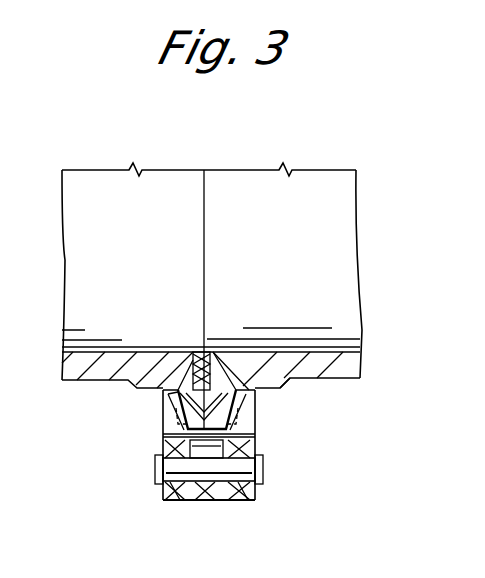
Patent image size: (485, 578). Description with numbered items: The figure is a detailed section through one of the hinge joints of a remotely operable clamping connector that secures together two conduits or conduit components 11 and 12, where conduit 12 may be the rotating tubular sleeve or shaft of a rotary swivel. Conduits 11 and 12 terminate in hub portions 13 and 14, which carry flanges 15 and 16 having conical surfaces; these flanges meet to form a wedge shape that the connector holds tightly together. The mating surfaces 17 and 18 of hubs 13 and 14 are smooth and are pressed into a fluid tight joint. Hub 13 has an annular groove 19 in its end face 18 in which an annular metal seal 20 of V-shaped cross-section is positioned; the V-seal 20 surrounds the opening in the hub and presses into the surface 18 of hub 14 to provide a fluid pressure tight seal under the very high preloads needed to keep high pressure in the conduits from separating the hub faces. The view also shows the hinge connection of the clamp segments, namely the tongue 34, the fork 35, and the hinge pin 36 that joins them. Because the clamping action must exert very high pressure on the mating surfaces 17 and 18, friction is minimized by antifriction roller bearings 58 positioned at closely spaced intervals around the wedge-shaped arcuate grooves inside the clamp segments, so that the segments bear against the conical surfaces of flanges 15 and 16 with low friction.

The conduit 11 is at (66, 384).
The conduit 12 is at (345, 369).
The hub portion 13 is at (126, 400).
The hub portion 14 is at (280, 385).
The flange 15 is at (174, 421).
The flange 16 is at (244, 412).
The mating surface 17 is at (212, 398).
The mating surface 18 is at (197, 357).
The annular groove 19 is at (172, 399).
The annular metal seal 20 is at (196, 372).
The tongue 34 is at (213, 501).
The fork 35 is at (182, 499).
The hinge pin 36 is at (264, 470).
The roller bearings 58 is at (252, 427).